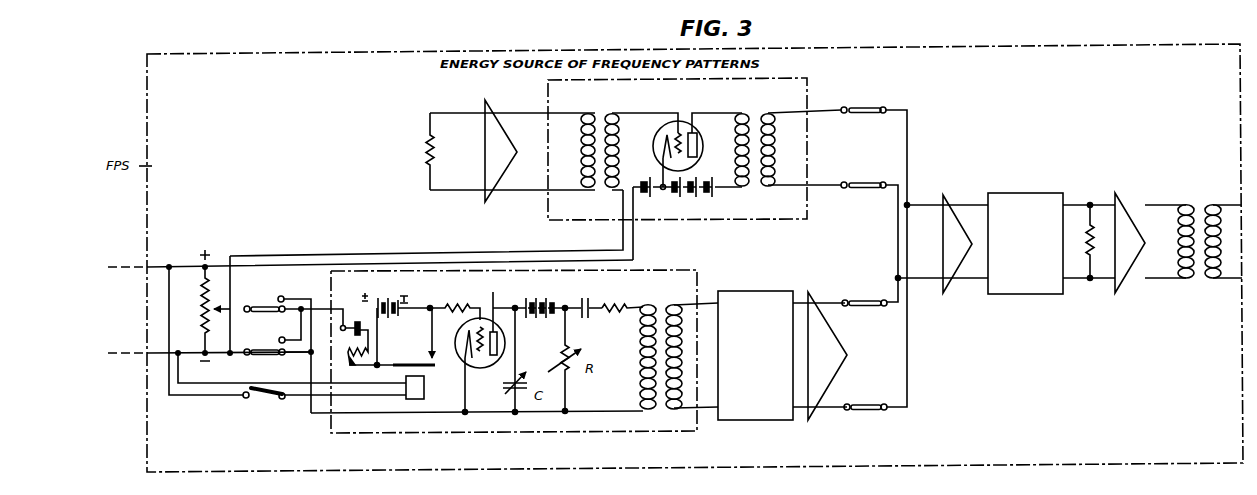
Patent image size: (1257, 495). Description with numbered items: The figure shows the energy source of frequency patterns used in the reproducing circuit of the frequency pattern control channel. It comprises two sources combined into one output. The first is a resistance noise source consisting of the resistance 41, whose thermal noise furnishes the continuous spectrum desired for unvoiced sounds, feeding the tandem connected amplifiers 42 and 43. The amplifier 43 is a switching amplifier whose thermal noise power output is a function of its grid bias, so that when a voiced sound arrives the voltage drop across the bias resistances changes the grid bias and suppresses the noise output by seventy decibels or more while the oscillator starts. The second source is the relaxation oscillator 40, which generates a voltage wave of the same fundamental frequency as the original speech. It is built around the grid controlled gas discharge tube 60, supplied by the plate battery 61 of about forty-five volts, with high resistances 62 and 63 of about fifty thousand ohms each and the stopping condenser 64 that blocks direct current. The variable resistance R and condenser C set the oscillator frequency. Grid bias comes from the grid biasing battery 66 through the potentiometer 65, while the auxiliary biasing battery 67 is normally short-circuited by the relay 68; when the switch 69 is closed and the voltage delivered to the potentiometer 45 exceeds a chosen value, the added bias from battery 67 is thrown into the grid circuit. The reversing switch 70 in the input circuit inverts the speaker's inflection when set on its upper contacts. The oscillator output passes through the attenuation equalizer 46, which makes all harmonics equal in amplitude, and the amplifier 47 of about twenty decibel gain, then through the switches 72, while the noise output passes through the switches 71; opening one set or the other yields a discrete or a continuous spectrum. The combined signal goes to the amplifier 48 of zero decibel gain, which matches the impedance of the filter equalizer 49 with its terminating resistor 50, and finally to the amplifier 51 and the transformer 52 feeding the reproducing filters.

The relaxation oscillator 40 is at (650, 426).
The resistance 41 is at (436, 154).
The amplifier 42 is at (492, 107).
The switching amplifier 43 is at (806, 96).
The potentiometer 45 is at (212, 286).
The attenuation equalizer 46 is at (758, 418).
The amplifier 47 is at (815, 412).
The amplifier 48 is at (948, 287).
The filter equalizer 49 is at (1028, 288).
The terminating resistor 50 is at (1092, 256).
The amplifier 51 is at (1120, 284).
The transformer 52 is at (1193, 282).
The grid controlled gas discharge tube 60 is at (476, 367).
The plate battery 61 is at (538, 297).
The resistance 62 is at (450, 302).
The resistance 63 is at (600, 317).
The stopping condenser 64 is at (583, 297).
The potentiometer 65 is at (345, 352).
The grid biasing battery 66 is at (356, 320).
The auxiliary biasing battery 67 is at (386, 301).
The short-circuiting relay 68 is at (425, 388).
The switch 69 is at (254, 400).
The reversing switch 70 is at (263, 313).
The switches 71 is at (865, 114).
The switches 72 is at (872, 306).